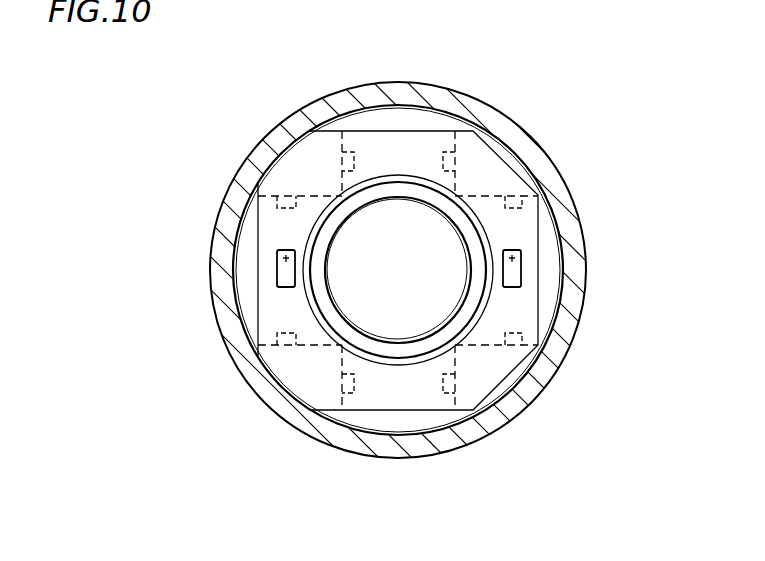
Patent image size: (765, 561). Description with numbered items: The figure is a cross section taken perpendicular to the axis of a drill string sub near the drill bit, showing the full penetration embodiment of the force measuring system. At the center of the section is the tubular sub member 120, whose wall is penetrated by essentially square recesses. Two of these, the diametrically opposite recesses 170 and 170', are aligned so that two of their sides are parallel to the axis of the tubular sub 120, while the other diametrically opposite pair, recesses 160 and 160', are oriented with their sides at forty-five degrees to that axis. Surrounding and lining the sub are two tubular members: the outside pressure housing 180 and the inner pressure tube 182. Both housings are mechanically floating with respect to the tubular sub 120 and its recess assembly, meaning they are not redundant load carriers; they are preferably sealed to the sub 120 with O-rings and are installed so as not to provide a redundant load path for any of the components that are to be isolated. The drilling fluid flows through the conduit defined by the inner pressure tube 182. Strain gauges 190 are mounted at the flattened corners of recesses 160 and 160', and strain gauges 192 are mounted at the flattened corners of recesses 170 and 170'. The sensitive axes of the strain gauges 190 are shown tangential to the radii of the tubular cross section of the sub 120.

The tubular sub member 120 is at (305, 165).
The recess 160 is at (497, 270).
The recess 160' is at (341, 270).
The recess 170 is at (398, 106).
The recess 170' is at (398, 436).
The outside pressure housing 180 is at (558, 347).
The inner pressure tube 182 is at (468, 308).
The strain gauges 190 is at (282, 192).
The strain gauges 192 is at (338, 157).